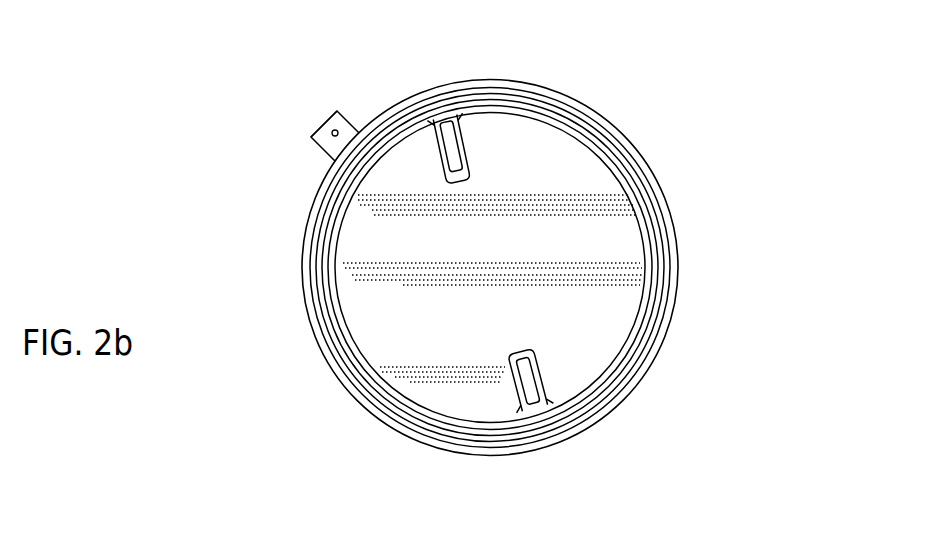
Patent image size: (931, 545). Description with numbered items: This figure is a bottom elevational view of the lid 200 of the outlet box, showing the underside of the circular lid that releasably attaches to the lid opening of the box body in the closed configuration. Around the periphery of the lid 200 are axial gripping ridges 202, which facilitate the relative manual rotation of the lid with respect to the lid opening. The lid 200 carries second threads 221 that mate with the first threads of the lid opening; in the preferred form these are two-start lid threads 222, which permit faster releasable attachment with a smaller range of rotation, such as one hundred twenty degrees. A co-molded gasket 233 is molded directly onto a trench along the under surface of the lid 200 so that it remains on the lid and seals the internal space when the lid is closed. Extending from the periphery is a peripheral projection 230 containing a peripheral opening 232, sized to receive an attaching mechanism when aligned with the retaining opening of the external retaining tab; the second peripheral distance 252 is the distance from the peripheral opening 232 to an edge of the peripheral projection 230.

The lid 200 is at (548, 268).
The axial gripping ridges 202 is at (0, 0).
The second threads 221 is at (529, 268).
The 2-start lid threads 222 is at (542, 268).
The peripheral projection 230 is at (365, 91).
The peripheral opening 232 is at (242, 163).
The co-molded gasket 233 is at (497, 216).
The second peripheral distance 252 is at (296, 75).